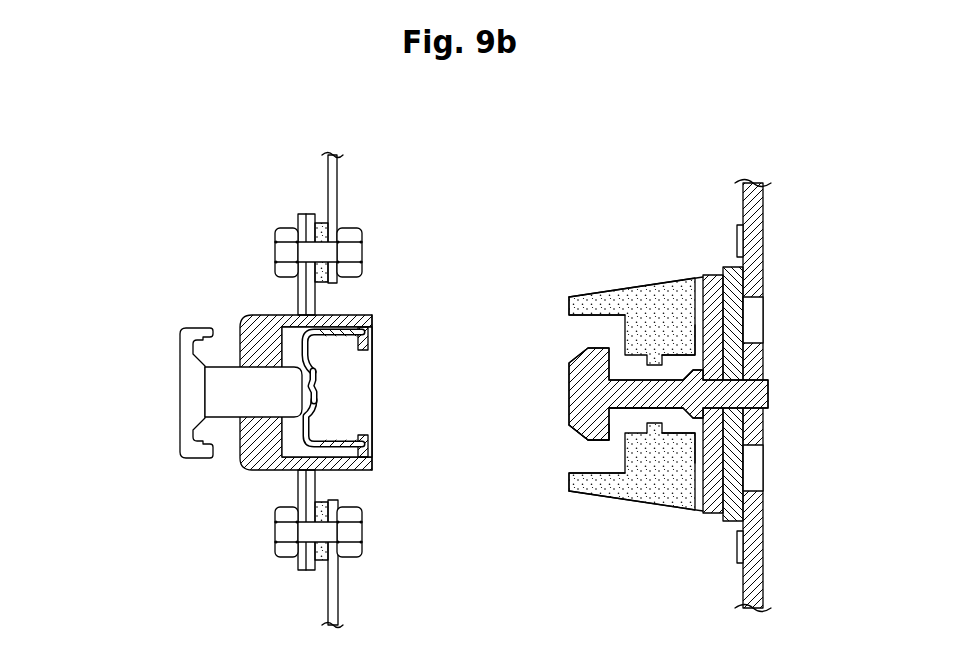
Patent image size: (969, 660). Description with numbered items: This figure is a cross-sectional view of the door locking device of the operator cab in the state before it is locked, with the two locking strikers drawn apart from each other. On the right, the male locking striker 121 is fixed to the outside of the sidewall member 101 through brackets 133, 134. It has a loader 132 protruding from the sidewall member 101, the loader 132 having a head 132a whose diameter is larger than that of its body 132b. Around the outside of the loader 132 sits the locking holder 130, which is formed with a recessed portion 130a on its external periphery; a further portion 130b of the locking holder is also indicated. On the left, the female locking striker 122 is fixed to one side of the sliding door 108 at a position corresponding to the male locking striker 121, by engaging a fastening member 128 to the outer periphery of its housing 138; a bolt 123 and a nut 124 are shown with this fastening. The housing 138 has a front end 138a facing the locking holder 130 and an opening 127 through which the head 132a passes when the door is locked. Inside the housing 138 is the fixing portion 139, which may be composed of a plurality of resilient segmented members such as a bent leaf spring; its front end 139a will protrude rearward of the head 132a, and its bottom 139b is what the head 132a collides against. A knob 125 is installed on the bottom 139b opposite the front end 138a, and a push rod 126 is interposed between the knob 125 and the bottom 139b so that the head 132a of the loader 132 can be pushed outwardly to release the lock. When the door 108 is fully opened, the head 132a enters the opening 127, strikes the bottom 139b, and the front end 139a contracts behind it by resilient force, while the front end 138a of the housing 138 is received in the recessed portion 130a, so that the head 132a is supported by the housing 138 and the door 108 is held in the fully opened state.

The sidewall member 101 is at (763, 253).
The sliding door 108 is at (338, 183).
The male locking striker 121 is at (598, 270).
The female locking striker 122 is at (216, 303).
The bolt 123 is at (303, 214).
The lower nut 124 is at (309, 571).
The knob 125 is at (189, 411).
The push rod 126 is at (232, 411).
The opening 127 is at (350, 383).
The fastening member 128 is at (352, 229).
The locking holder 130 is at (660, 294).
The recessed portion 130a is at (568, 313).
The housing lip 130b is at (683, 362).
The loader 132 is at (768, 401).
The head 132a is at (586, 408).
The body 132b is at (628, 408).
The bracket 133 is at (710, 513).
The bracket 134 is at (722, 264).
The housing 138 is at (261, 315).
The front end 138a is at (371, 324).
The fixing portion 139 is at (356, 327).
The front end 139a is at (373, 343).
The bottom 139b is at (313, 408).